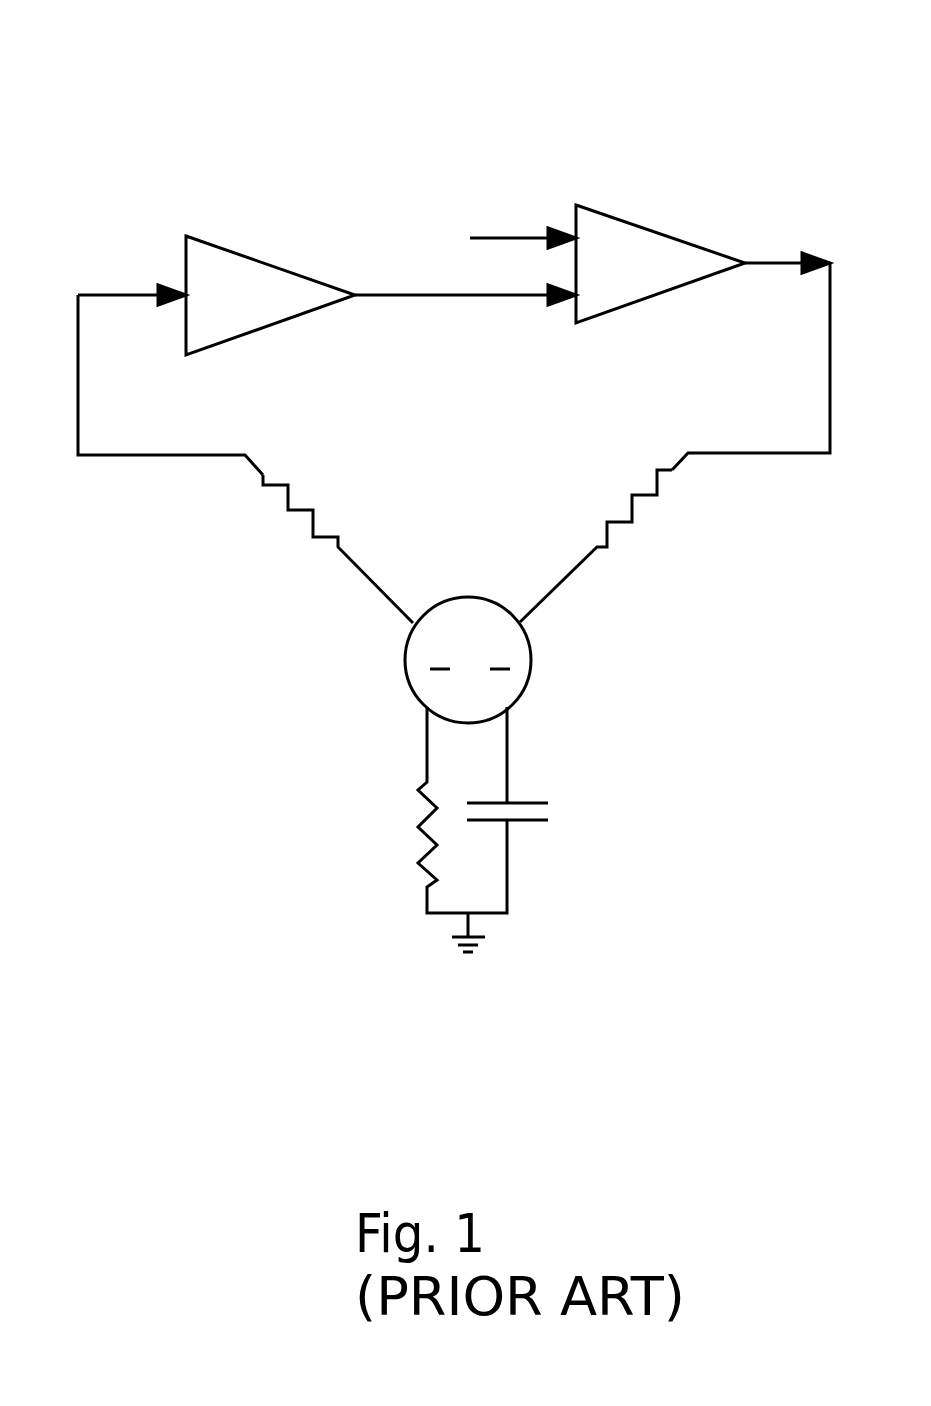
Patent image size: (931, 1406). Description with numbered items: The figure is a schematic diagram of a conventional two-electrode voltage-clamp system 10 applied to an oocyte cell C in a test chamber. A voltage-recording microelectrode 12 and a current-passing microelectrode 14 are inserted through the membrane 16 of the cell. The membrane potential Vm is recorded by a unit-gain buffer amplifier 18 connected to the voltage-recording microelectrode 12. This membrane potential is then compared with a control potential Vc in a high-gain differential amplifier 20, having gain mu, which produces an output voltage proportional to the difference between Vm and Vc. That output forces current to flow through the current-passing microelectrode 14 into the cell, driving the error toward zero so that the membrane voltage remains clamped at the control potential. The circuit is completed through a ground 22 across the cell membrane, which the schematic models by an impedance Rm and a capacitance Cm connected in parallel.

The two-electrode voltage-clamp system 10 is at (661, 90).
The voltage-recording microelectrode 12 is at (285, 498).
The current-passing microelectrode 14 is at (645, 497).
The membrane 16 is at (530, 645).
The unit-gain buffer amplifier 18 is at (252, 256).
The high-gain differential amplifier 20 is at (660, 232).
The ground 22 is at (480, 937).